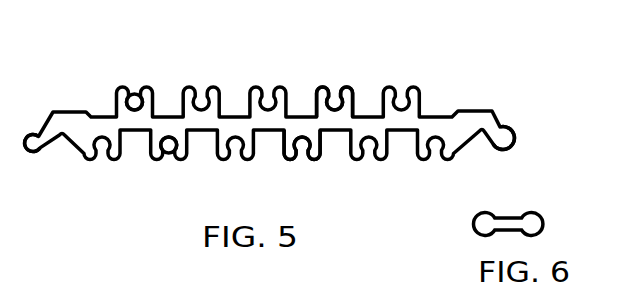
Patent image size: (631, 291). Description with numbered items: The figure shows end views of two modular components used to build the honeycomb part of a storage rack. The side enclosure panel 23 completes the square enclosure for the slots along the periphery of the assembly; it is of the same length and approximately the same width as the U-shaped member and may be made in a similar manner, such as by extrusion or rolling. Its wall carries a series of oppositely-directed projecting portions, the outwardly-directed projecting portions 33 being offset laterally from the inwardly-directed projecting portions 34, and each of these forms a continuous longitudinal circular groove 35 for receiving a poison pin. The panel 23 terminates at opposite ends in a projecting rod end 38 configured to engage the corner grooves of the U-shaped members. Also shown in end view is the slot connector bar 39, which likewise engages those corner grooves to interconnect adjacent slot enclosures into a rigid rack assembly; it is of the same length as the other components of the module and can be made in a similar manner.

In FIG. 5, the side enclosure panel 23 is at (243, 81).
In FIG. 5, the outwardly-directed projecting portions 33 is at (354, 88).
In FIG. 5, the inwardly-directed projecting portions 34 is at (313, 157).
In FIG. 5, the continuous longitudinal circular grooves 35 is at (136, 97).
In FIG. 5, the projecting rod end 38 is at (36, 146).
In FIG. 6, the slot connector bar 39 is at (537, 225).